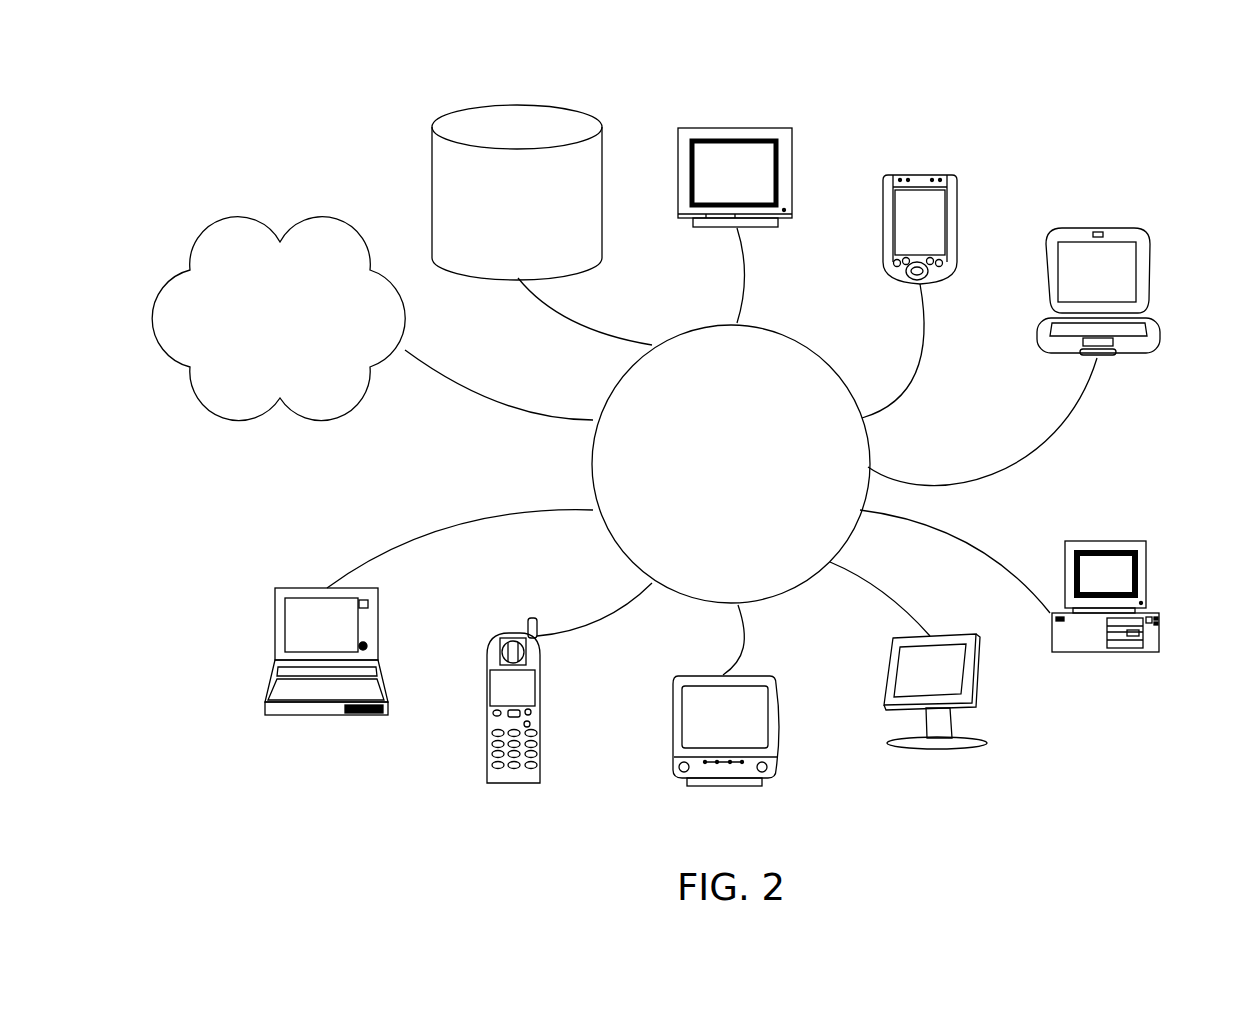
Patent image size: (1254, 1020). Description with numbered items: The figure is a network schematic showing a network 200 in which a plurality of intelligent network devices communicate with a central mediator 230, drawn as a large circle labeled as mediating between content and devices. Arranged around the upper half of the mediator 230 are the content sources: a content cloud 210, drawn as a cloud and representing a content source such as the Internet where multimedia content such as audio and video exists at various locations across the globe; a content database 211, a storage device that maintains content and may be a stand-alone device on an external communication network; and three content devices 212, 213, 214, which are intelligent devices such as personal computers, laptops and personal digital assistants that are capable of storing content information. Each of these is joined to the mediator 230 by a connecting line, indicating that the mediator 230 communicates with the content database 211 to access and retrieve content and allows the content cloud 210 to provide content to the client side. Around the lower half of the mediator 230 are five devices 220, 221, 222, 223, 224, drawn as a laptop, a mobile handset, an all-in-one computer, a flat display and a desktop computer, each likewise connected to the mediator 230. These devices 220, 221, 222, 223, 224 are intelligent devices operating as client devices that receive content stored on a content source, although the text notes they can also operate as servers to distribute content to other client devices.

The network 200 is at (210, 130).
The content cloud 210 is at (270, 412).
The content database 211 is at (519, 100).
The content device 212 is at (756, 127).
The content device 213 is at (926, 171).
The content device 214 is at (1110, 225).
The mediator 230 is at (731, 464).
The device 220 is at (277, 721).
The device 221 is at (482, 769).
The device 222 is at (786, 734).
The device 223 is at (996, 743).
The device 224 is at (1170, 622).